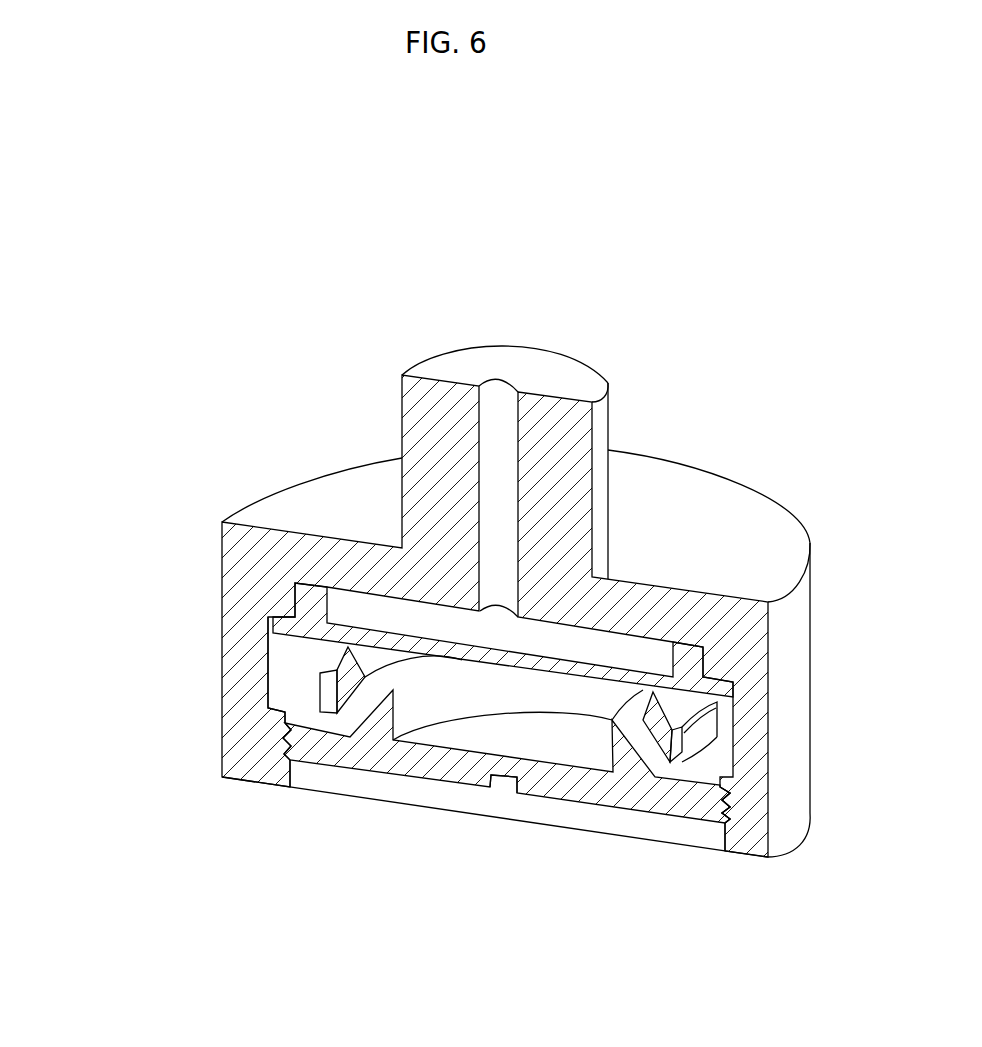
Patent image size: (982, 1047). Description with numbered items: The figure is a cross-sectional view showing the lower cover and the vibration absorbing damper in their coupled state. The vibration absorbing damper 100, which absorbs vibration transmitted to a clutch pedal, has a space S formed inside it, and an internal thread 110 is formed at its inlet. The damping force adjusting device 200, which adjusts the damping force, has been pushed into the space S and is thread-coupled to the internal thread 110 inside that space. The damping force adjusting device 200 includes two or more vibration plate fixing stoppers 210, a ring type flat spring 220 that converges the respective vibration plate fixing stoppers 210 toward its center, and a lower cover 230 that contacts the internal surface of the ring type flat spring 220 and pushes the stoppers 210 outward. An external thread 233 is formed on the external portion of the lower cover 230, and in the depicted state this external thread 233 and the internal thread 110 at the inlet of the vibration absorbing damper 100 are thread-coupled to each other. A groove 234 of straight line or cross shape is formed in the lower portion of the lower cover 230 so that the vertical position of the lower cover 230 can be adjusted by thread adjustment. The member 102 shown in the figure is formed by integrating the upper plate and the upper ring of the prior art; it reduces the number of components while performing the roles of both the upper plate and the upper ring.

The vibration absorbing damper 100 is at (238, 237).
The member integrating upper plate and upper ring 102 is at (308, 603).
The internal thread 110 is at (730, 795).
The damping force adjusting device 200 is at (752, 975).
The vibration plate fixing stopper 210 is at (658, 728).
The ring type flat spring 220 is at (328, 703).
The lower cover 230 is at (577, 790).
The external thread 233 is at (723, 805).
The groove 234 is at (503, 783).
The space S is at (292, 677).